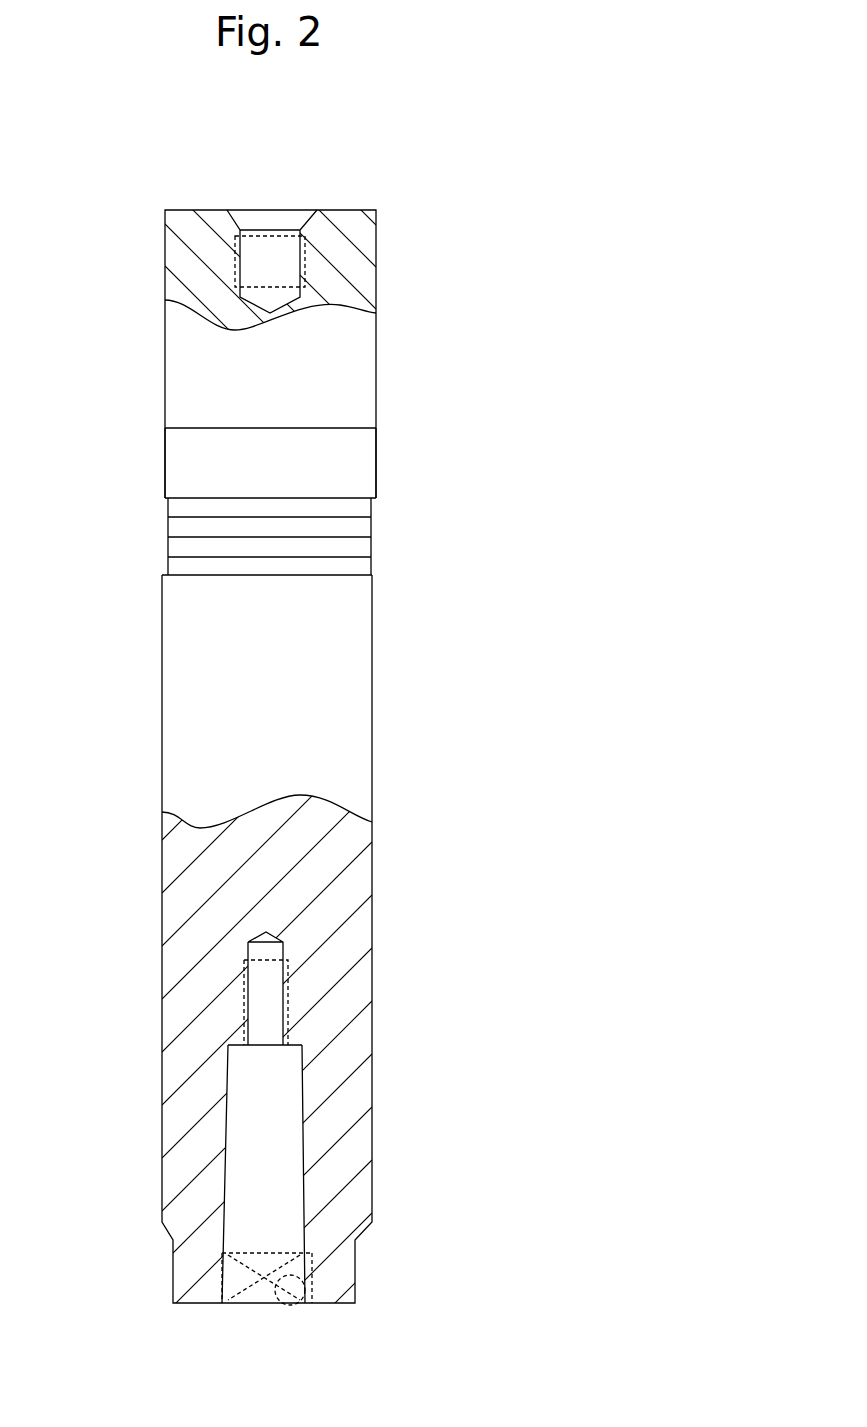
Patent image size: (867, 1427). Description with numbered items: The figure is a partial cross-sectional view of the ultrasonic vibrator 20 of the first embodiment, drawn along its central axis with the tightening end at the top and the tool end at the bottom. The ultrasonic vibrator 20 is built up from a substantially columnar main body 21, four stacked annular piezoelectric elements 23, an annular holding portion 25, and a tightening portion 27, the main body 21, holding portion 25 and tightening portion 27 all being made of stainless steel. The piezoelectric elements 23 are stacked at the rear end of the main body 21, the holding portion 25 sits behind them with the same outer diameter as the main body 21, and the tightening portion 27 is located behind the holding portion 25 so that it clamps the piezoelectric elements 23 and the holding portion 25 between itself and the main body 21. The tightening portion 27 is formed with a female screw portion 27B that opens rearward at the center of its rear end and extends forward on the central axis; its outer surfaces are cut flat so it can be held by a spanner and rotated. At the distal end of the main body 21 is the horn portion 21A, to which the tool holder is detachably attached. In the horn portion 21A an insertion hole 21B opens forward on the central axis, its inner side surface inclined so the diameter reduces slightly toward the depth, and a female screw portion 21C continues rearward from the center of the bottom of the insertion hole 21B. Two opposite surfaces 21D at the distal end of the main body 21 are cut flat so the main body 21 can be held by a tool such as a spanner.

The ultrasonic vibrator 20 is at (456, 212).
The main body 21 is at (358, 778).
The horn portion 21A is at (393, 1127).
The insertion hole 21B is at (282, 1303).
The female screw portion 21C is at (282, 998).
The opposite surfaces 21D is at (252, 1303).
The piezoelectric elements 23 is at (372, 565).
The holding portion 25 is at (180, 470).
The tightening portion 27 is at (355, 365).
The female screw portion 27B is at (242, 250).